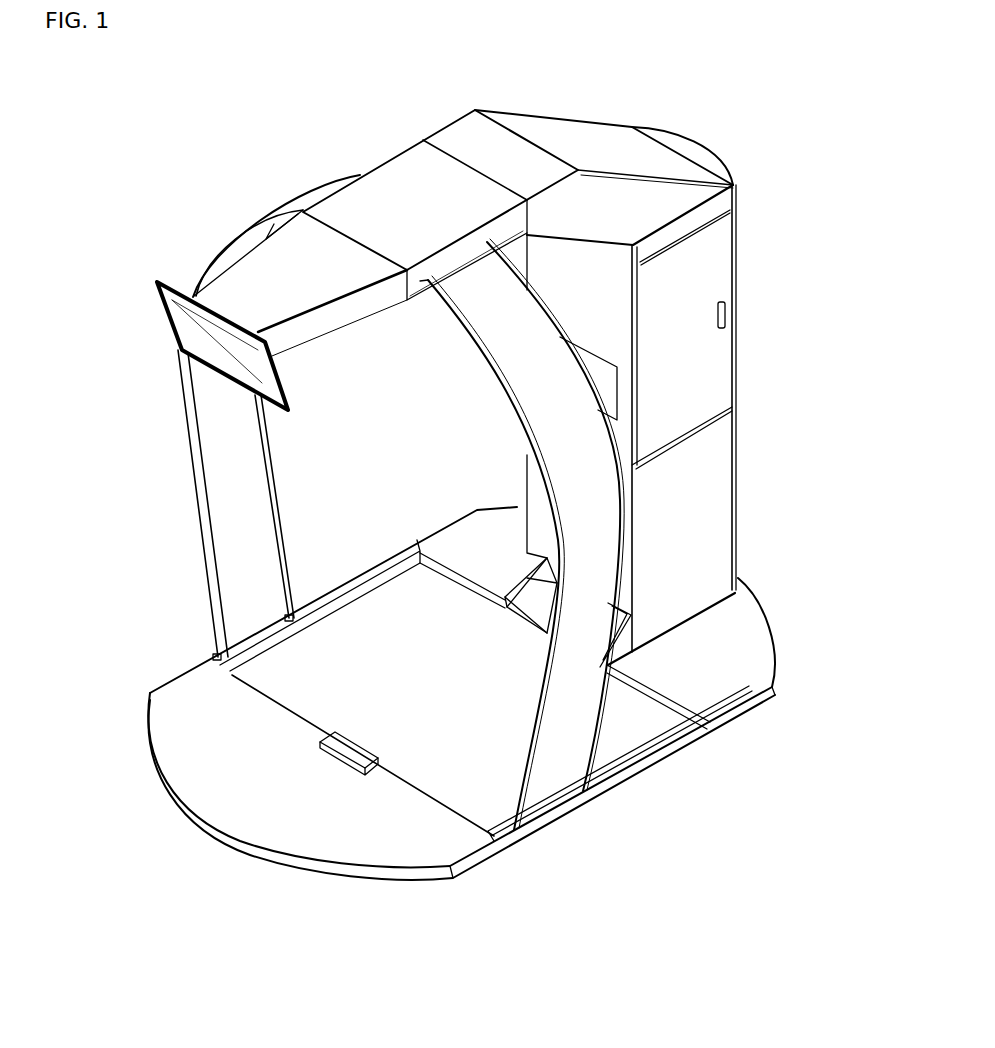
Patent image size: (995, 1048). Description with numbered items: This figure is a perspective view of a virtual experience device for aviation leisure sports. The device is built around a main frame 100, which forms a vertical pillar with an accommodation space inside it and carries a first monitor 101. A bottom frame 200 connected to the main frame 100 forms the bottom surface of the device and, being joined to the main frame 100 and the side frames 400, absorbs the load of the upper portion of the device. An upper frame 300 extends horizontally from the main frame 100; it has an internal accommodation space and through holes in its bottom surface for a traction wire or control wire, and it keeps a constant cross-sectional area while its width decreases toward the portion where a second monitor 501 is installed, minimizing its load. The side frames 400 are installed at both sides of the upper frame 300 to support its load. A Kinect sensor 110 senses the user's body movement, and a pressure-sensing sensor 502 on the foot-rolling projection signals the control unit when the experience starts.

The main frame 100 is at (737, 442).
The first monitor 101 is at (600, 370).
The Kinect sensor 110 is at (518, 608).
The bottom frame 200 is at (776, 645).
The upper frame 300 is at (398, 164).
The side frames 400 is at (517, 363).
The second monitor 501 is at (193, 335).
The pressure-sensing sensor 502 is at (337, 743).